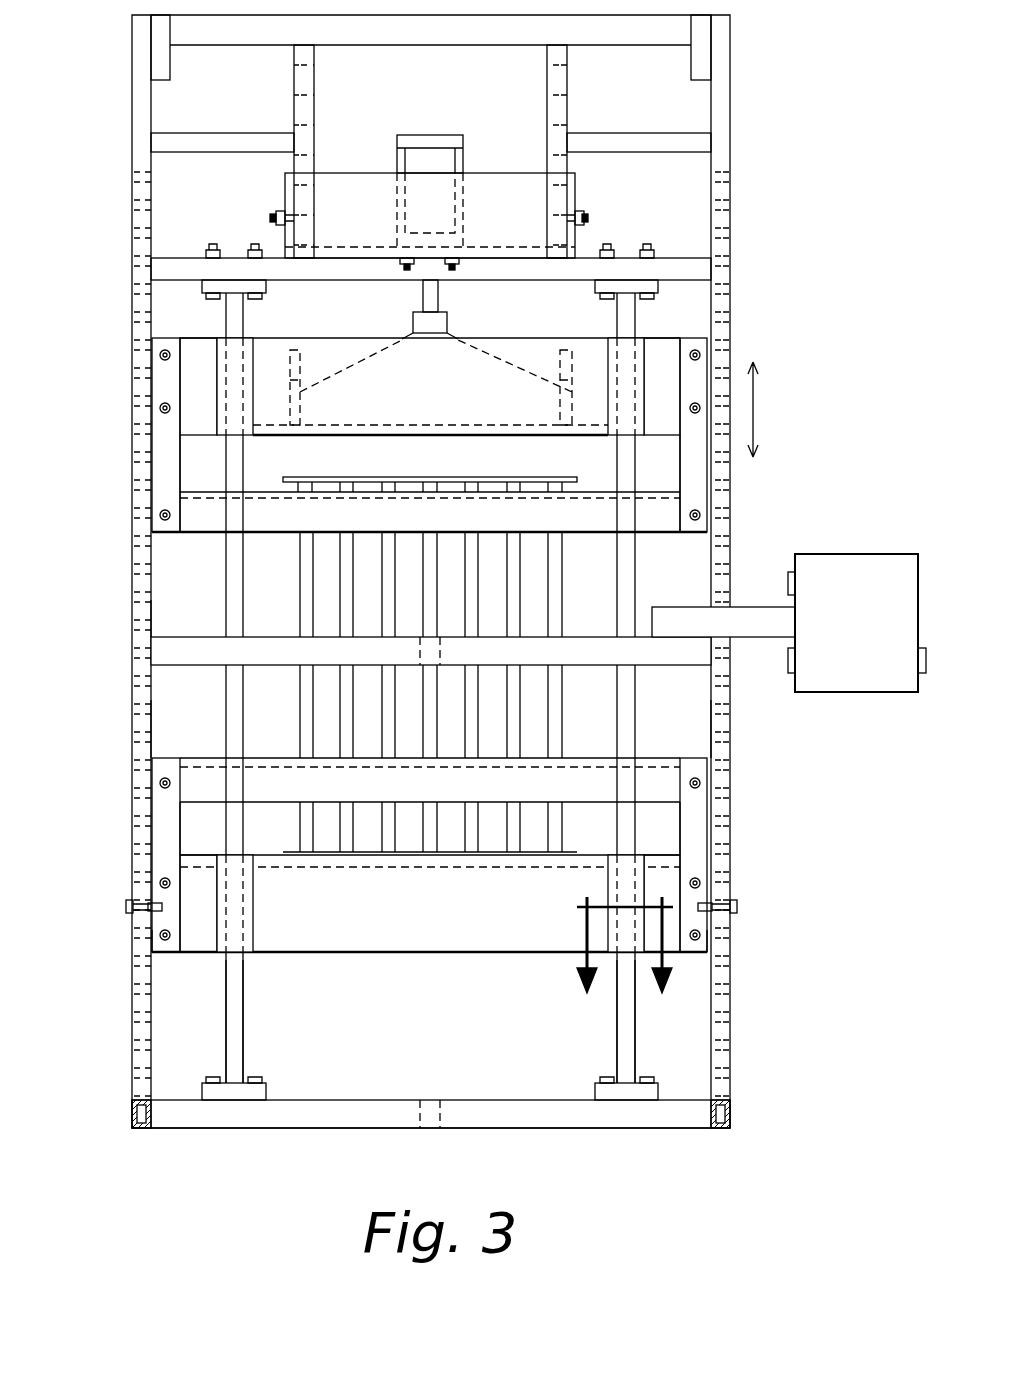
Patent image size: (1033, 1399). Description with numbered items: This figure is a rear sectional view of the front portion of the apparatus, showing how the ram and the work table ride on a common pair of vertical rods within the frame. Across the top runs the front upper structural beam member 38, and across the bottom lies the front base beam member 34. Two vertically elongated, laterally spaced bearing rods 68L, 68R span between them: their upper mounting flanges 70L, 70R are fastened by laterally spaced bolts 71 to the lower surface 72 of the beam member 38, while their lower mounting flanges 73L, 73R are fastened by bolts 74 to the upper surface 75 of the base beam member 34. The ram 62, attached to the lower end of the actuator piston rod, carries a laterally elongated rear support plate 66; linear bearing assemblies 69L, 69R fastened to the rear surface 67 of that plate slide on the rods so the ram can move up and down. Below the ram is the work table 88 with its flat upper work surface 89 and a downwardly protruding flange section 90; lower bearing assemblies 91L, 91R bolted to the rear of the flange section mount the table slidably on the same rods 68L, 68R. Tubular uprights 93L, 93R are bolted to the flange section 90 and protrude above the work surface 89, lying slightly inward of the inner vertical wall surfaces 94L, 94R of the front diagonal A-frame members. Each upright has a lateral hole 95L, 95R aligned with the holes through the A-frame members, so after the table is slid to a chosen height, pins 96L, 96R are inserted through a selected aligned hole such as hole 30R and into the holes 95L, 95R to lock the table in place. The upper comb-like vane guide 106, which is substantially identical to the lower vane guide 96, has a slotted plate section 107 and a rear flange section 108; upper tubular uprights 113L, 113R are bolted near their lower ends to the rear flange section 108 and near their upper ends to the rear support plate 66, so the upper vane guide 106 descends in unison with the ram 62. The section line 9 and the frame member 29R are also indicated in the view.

The section line 9- 9 is at (625, 960).
The right frame upright 29R is at (152, 680).
The horizontally aligned hole 30R is at (132, 637).
The front base beam member 34 is at (243, 1128).
The front upper structural beam member 38 is at (630, 133).
The ram 62 is at (476, 333).
The rear support plate 66 is at (437, 427).
The rear surface 67 is at (205, 392).
The bearing rod 68R is at (226, 1050).
The bearing rod 68L is at (635, 1052).
The linear bearing assembly 69R is at (178, 362).
The linear bearing assembly 69L is at (645, 372).
The upper mounting flange 70R is at (238, 298).
The upper mounting flange 70L is at (660, 286).
The bolts 71 is at (255, 290).
The lower surface 72 is at (385, 283).
The lower mounting flange 73R is at (266, 1090).
The lower mounting flange 73L is at (595, 1095).
The bolts 74 is at (250, 1082).
The upper surface 75 is at (403, 1100).
The work table 88 is at (437, 887).
The upper work surface 89 is at (670, 840).
The flange section 90 is at (360, 930).
The lower bearing assembly 91R is at (217, 885).
The lower bearing assembly 91L is at (646, 888).
The tubular upright 93R is at (165, 843).
The tubular upright 93L is at (707, 845).
The inner vertical wall surface 94R is at (152, 750).
The inner vertical wall surface 94L is at (707, 740).
The hole 95R is at (152, 938).
The hole 95L is at (707, 945).
The lower vane guide 96 is at (663, 777).
The pin 96R is at (122, 907).
The pin 96L is at (738, 910).
The upper vane guide 106 is at (200, 525).
The slotted plate section 107 is at (580, 500).
The rear flange section 108 is at (268, 522).
The upper tubular upright 113R is at (163, 458).
The upper tubular upright 113L is at (693, 465).